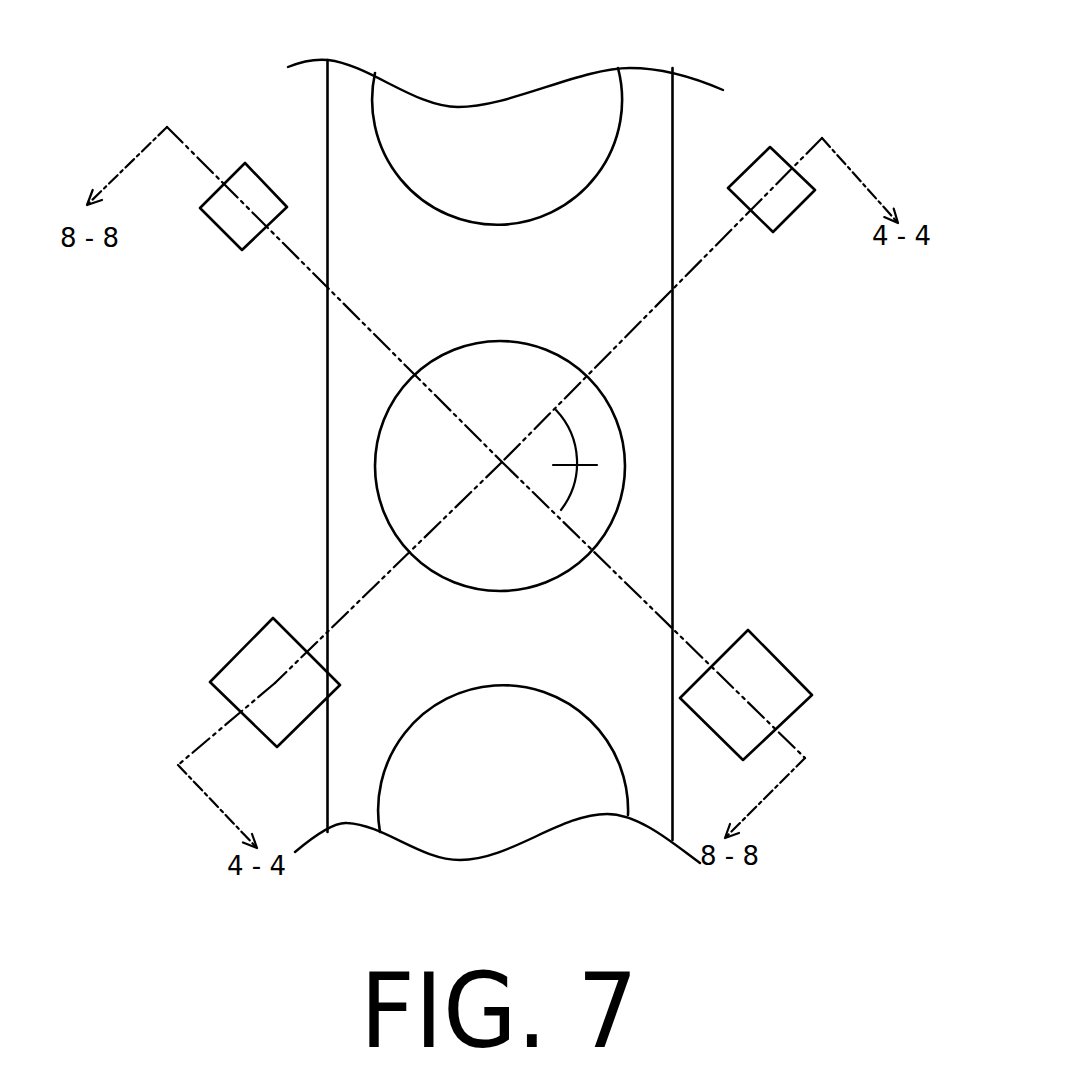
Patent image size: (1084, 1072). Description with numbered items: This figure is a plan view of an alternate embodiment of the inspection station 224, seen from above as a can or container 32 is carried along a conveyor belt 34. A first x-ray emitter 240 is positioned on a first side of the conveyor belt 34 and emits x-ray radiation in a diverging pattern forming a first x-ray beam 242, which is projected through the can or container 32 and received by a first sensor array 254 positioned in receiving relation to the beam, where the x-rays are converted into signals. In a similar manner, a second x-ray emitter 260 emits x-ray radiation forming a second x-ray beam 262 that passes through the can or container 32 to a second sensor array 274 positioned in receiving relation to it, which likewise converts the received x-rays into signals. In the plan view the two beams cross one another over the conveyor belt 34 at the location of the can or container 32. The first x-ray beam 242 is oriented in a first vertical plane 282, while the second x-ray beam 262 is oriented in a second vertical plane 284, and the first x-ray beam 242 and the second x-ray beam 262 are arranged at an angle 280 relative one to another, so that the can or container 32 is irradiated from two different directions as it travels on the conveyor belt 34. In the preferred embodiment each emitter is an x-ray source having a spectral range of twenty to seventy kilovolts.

The plate assembly 224 is at (503, 41).
The can or container 32 is at (373, 450).
The conveyor belt 34 is at (350, 535).
The first x-ray emitter 240 is at (762, 147).
The first x-ray beam 242 is at (690, 282).
The first sensor array 254 is at (227, 665).
The second x-ray emitter 260 is at (217, 227).
The second x-ray beam 262 is at (293, 265).
The second sensor array 274 is at (780, 658).
The angle 280 is at (585, 473).
The first vertical plane 282 is at (227, 732).
The second vertical plane 284 is at (192, 162).